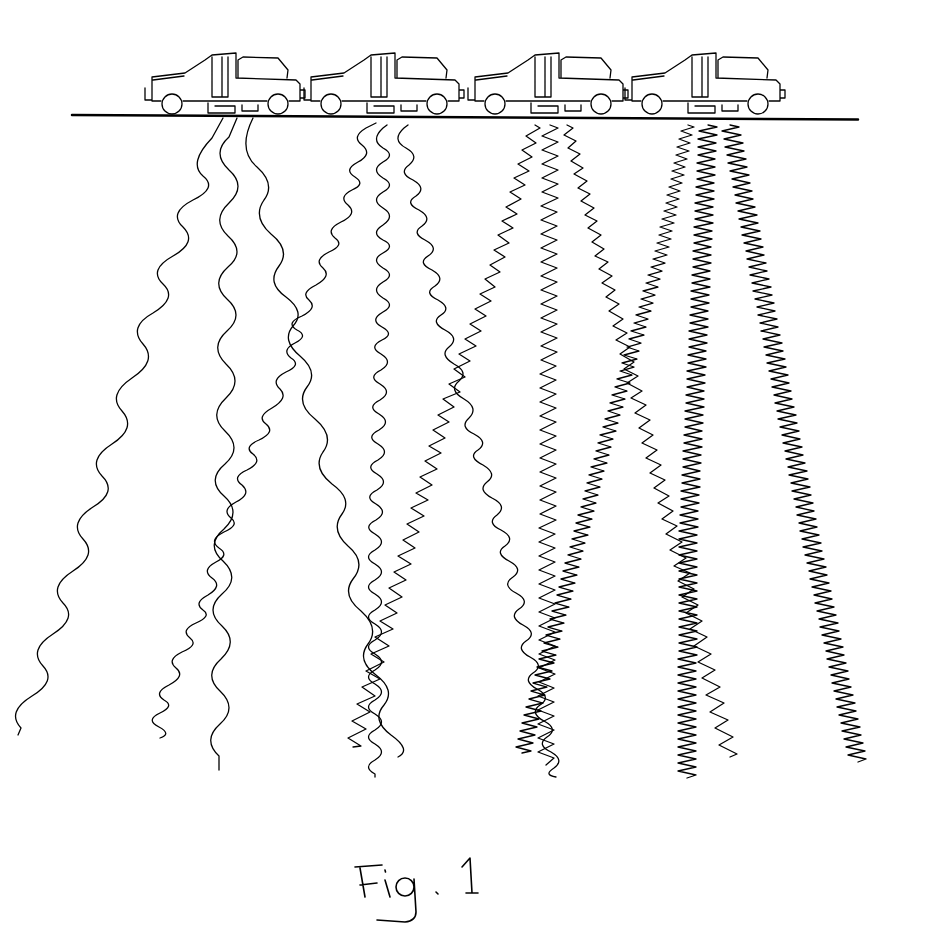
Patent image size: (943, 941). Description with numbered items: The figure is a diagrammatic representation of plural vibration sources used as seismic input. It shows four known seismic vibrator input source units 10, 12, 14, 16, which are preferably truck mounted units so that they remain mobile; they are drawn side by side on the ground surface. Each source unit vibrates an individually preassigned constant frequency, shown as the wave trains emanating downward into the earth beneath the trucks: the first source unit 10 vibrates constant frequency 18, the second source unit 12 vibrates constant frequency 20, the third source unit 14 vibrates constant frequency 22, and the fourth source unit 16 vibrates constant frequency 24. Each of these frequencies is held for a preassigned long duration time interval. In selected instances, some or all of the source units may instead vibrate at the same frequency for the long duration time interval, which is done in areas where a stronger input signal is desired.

The seismic vibrator input source unit 10 is at (207, 62).
The seismic vibrator input source unit 12 is at (372, 58).
The seismic vibrator input source unit 14 is at (538, 57).
The seismic vibrator input source unit 16 is at (692, 62).
The constant frequency 18 is at (182, 200).
The constant frequency 20 is at (342, 192).
The constant frequency 22 is at (520, 186).
The constant frequency 24 is at (673, 193).